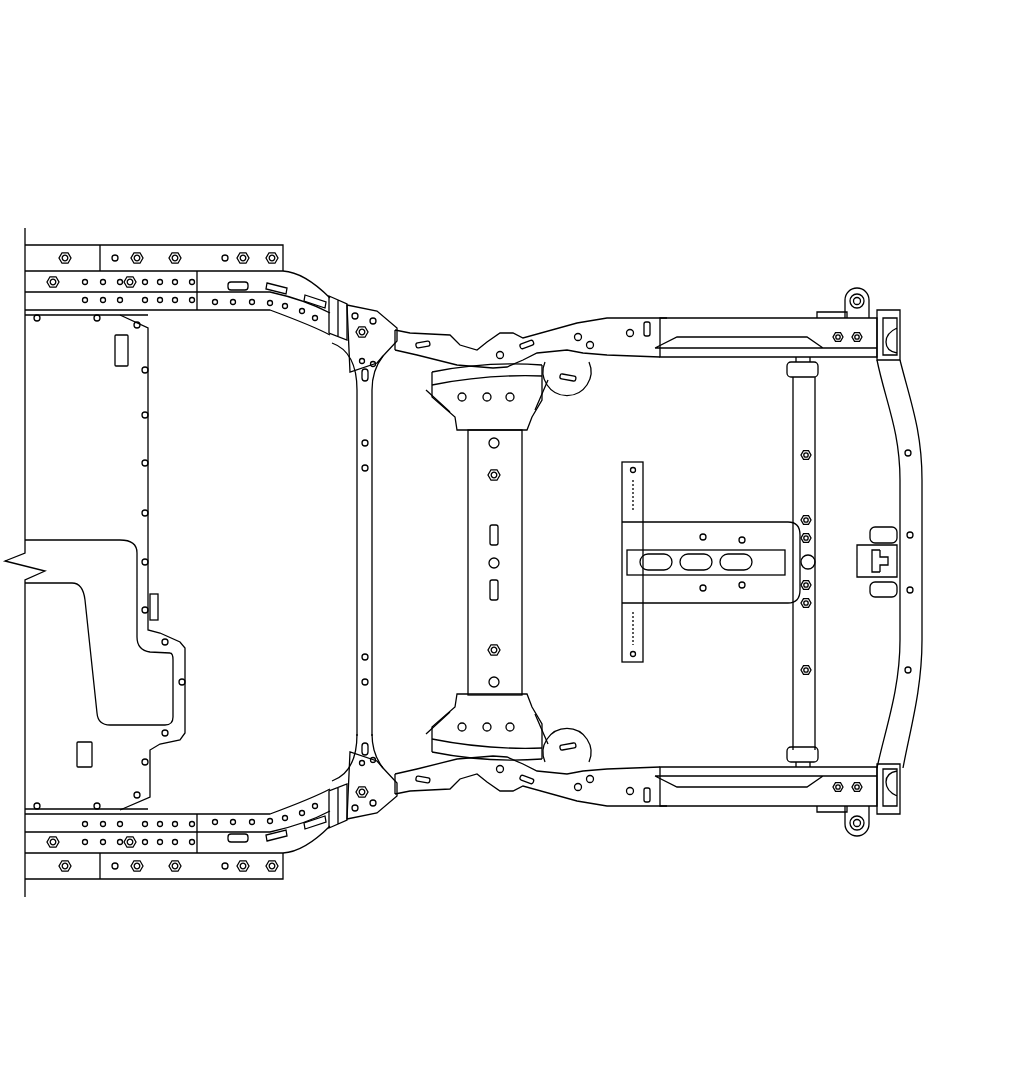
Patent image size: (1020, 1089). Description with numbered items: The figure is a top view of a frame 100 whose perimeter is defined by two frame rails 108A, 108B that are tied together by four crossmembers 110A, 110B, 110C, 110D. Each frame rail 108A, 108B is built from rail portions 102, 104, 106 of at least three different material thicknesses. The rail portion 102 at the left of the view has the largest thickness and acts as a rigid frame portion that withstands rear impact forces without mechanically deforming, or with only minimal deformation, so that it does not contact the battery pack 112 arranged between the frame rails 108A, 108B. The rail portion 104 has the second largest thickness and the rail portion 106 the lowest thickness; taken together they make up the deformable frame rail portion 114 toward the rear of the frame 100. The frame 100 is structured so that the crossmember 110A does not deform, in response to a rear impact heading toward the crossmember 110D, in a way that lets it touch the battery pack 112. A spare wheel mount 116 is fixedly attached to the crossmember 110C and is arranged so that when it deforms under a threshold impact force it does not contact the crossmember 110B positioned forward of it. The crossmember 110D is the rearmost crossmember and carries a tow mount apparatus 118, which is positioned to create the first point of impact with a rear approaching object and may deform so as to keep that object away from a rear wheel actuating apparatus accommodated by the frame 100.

The frame 100 is at (152, 78).
The rail portion 102 is at (207, 890).
The rail portion 104 is at (417, 827).
The rail portion 106 is at (672, 828).
The frame rail 108A is at (302, 308).
The frame rail 108B is at (273, 813).
The crossmember 110A is at (358, 578).
The crossmember 110B is at (488, 590).
The crossmember 110C is at (793, 455).
The crossmember 110D is at (870, 680).
The battery pack 112 is at (53, 375).
The deformable frame rail portion 114 is at (917, 280).
The spare wheel mount 116 is at (732, 548).
The tow mount apparatus 118 is at (877, 593).